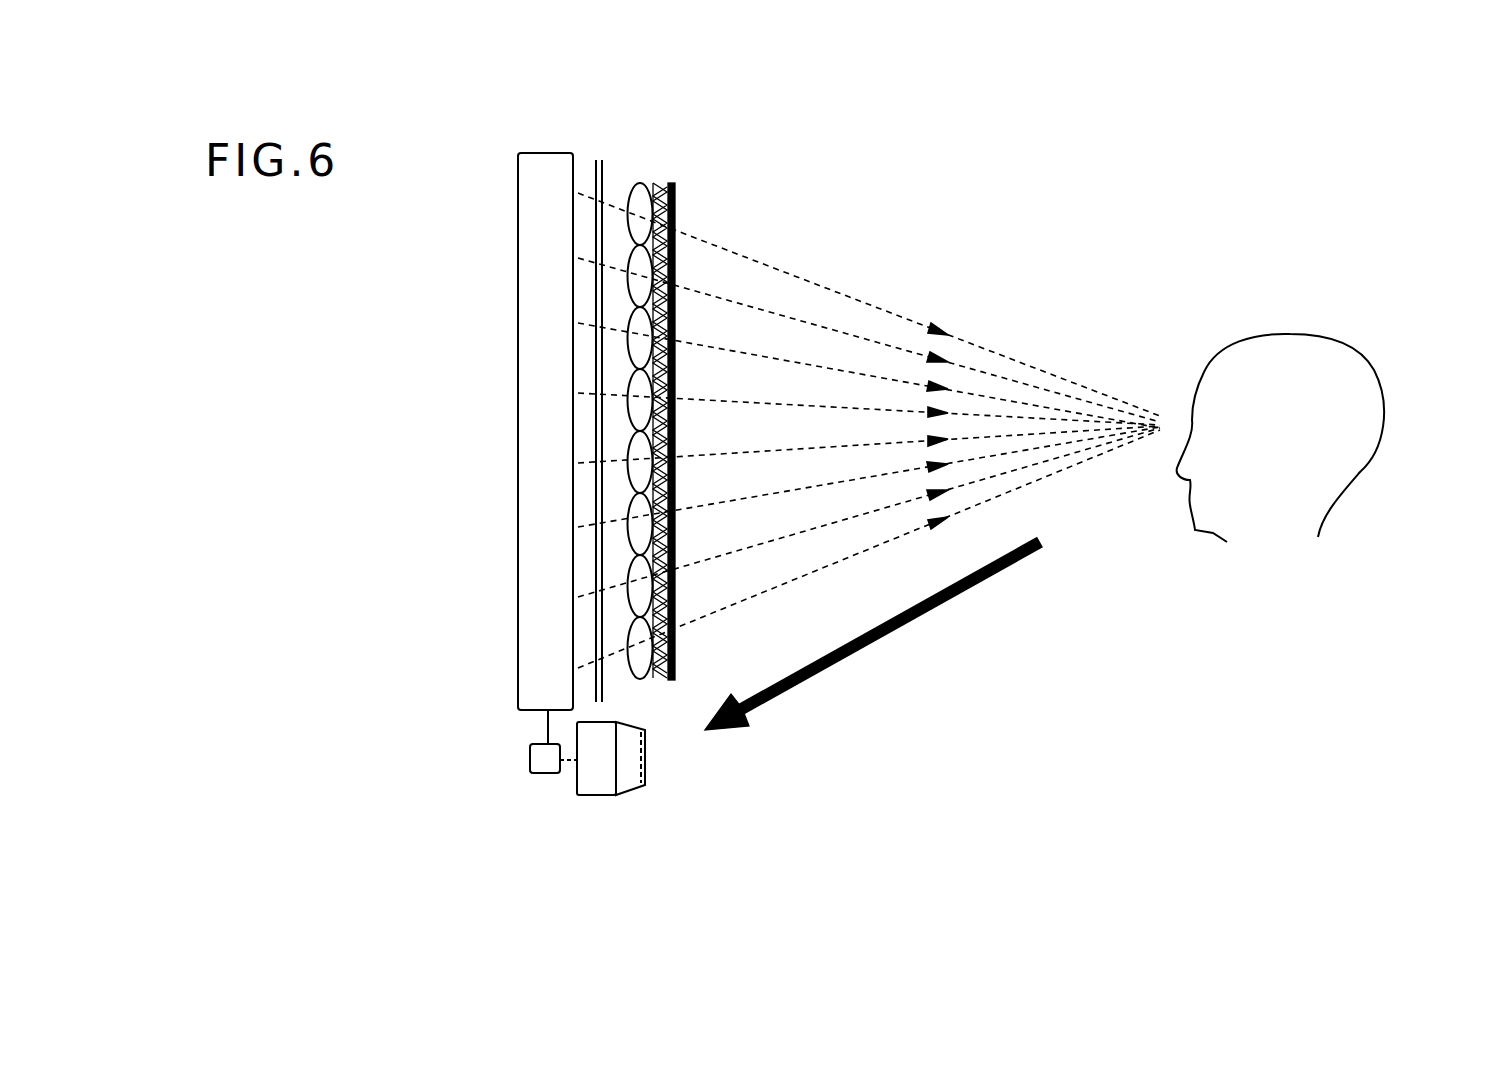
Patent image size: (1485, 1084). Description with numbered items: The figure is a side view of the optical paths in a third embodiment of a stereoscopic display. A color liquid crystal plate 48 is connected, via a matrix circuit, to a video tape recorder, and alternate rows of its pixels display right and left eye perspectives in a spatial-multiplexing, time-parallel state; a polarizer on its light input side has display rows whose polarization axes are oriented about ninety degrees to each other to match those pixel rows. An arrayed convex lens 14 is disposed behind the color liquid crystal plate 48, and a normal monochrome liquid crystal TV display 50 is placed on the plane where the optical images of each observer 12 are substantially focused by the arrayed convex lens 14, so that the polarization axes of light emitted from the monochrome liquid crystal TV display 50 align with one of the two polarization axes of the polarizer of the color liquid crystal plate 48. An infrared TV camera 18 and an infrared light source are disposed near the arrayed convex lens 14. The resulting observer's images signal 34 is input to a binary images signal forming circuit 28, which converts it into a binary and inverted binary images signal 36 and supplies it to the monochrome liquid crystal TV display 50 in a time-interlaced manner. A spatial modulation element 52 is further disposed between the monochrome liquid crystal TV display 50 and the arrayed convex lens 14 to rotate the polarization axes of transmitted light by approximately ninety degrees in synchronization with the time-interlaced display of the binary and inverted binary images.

The observer 12 is at (1365, 520).
The arrayed convex lens 14 is at (650, 180).
The infrared TV camera 18 is at (636, 800).
The binary images signal forming circuit 28 is at (540, 777).
The observer's images signal 34 is at (572, 763).
The binary and inverted binary images signal 36 is at (530, 722).
The color liquid crystal plate 48 is at (677, 185).
The monochrome liquid crystal TV display 50 is at (515, 262).
The spatial modulation element 52 is at (603, 157).